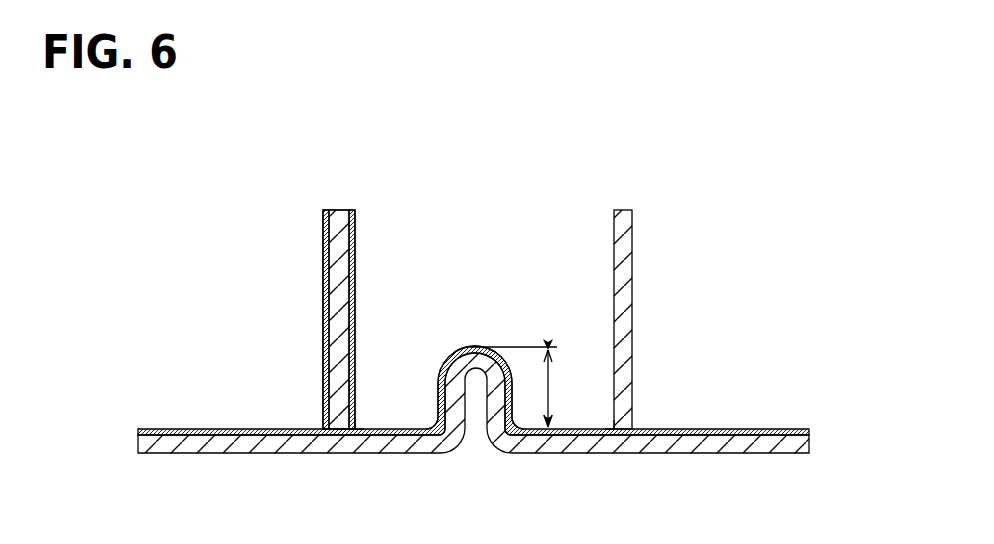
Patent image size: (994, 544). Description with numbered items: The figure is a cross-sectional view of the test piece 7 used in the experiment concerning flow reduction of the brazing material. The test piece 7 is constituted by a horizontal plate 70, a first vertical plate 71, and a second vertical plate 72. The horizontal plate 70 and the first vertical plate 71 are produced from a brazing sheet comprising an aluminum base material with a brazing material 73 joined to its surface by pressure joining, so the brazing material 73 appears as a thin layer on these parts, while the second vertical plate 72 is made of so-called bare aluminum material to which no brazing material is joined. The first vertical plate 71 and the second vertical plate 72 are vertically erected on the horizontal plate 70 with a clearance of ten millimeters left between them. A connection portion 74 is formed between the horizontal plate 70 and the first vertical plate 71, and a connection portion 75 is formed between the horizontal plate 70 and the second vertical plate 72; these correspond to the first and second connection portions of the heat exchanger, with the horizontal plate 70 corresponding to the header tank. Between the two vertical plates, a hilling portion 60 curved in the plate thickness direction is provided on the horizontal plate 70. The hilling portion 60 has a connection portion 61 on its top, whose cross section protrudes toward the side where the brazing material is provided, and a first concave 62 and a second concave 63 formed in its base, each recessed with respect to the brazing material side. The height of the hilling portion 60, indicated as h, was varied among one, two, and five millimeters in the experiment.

The test piece 7 is at (473, 295).
The hilling portion 60 is at (471, 370).
The connection portion 61 is at (470, 346).
The first concave 62 is at (432, 424).
The second concave 63 is at (523, 428).
The horizontal plate 70 is at (473, 431).
The first vertical plate 71 is at (333, 214).
The second vertical plate 72 is at (618, 212).
The brazing material 73 is at (356, 277).
The connection portion 74 is at (358, 427).
The connection portion 75 is at (610, 427).